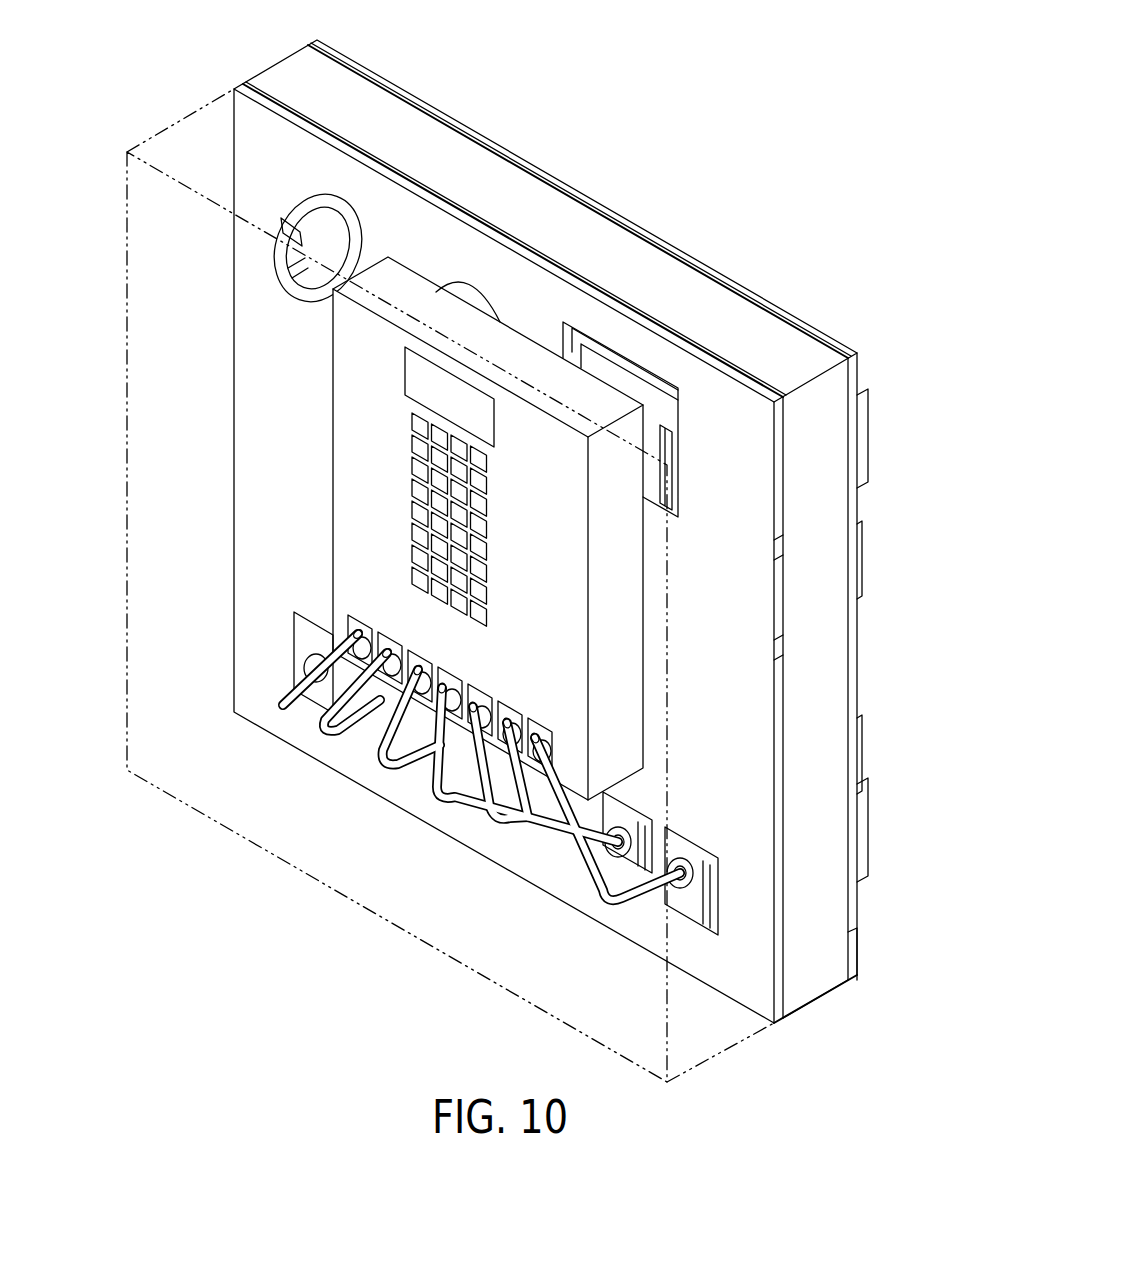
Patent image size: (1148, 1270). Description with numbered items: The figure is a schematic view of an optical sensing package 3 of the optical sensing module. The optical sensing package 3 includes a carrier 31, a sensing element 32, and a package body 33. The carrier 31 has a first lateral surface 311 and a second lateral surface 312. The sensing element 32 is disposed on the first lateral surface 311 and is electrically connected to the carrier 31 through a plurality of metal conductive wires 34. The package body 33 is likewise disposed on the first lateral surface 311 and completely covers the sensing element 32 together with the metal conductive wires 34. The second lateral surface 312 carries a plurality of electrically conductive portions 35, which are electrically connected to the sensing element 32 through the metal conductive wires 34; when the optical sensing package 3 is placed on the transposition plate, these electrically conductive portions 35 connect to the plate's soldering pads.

The optical sensing package 3 is at (497, 546).
The carrier 31 is at (545, 541).
The first lateral surface 311 is at (743, 963).
The second lateral surface 312 is at (850, 512).
The sensing element 32 is at (360, 481).
The package body 33 is at (157, 438).
The metal conductive wires 34 is at (277, 723).
The electrically conductive portions 35 is at (316, 652).